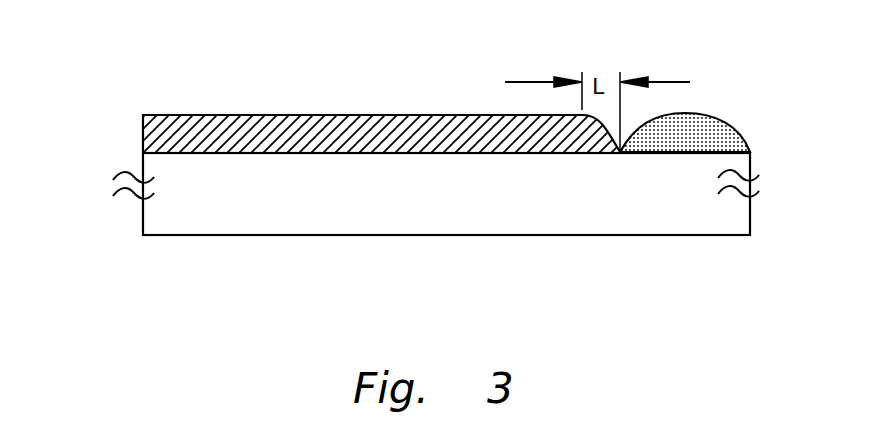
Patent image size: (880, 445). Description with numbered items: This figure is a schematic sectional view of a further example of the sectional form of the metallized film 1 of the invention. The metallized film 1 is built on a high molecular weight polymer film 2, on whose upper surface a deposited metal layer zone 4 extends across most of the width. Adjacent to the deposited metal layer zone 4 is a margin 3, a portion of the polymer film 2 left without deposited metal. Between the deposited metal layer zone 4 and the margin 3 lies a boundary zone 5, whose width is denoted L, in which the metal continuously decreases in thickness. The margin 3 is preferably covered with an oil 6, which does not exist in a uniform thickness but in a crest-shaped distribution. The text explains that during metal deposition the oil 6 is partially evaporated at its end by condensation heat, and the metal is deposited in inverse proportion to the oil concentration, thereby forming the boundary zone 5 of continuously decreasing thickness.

The metallized film 1 is at (143, 164).
The high molecular weight polymer film 2 is at (350, 212).
The margin 3 is at (680, 154).
The deposited metal layer zone 4 is at (288, 114).
The boundary zone 5 is at (533, 154).
The oil 6 is at (710, 123).